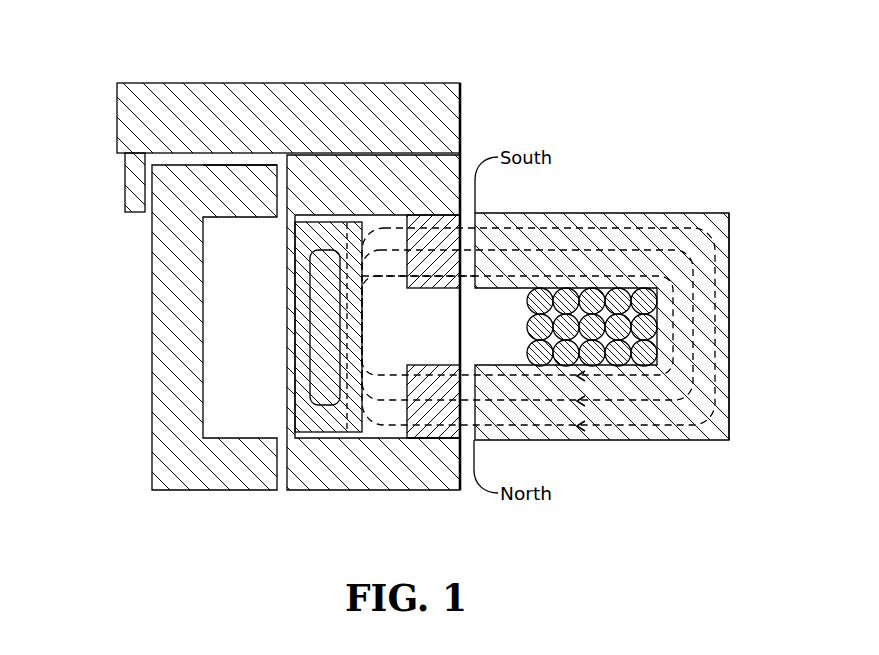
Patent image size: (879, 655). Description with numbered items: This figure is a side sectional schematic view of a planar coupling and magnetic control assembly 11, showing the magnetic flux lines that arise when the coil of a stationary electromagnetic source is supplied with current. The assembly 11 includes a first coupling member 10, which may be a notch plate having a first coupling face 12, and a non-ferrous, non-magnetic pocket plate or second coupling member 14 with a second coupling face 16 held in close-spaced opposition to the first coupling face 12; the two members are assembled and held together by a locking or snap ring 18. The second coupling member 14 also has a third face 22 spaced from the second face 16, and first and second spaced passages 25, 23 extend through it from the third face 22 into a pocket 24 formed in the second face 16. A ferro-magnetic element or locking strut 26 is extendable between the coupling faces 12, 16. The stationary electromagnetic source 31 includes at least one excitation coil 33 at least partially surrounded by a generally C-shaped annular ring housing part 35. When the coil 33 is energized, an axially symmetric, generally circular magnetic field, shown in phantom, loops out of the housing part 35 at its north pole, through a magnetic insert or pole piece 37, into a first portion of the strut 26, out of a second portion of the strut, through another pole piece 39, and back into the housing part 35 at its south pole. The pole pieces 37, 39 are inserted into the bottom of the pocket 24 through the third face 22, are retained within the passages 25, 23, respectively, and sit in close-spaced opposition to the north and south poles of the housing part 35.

The first coupling member 10 is at (242, 278).
The coupling and magnetic control assembly 11 is at (646, 279).
The first coupling face 12 is at (280, 460).
The second coupling member 14 is at (432, 84).
The second coupling face 16 is at (268, 183).
The snap ring 18 is at (120, 183).
The third face 22 is at (472, 140).
The second passage 23 is at (430, 218).
The pocket 24 is at (324, 223).
The first passage 25 is at (422, 440).
The locking strut 26 is at (325, 439).
The stationary electromagnetic source 31 is at (707, 212).
The excitation coil 33 is at (540, 296).
The housing part 35 is at (733, 363).
The pole piece 37 is at (422, 413).
The pole piece 39 is at (448, 240).